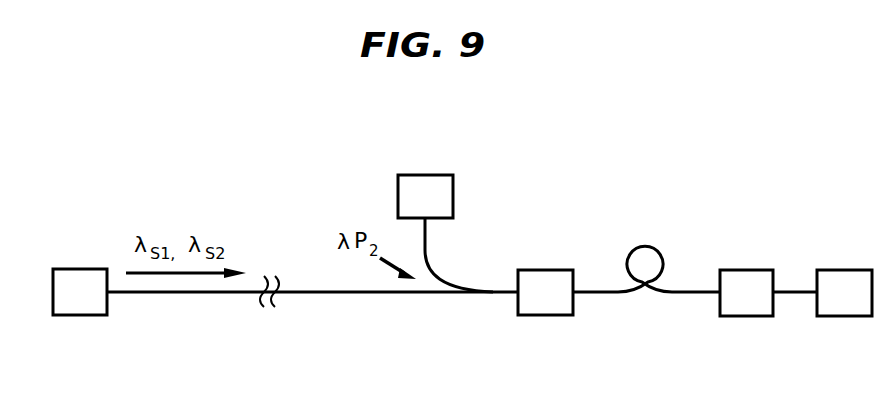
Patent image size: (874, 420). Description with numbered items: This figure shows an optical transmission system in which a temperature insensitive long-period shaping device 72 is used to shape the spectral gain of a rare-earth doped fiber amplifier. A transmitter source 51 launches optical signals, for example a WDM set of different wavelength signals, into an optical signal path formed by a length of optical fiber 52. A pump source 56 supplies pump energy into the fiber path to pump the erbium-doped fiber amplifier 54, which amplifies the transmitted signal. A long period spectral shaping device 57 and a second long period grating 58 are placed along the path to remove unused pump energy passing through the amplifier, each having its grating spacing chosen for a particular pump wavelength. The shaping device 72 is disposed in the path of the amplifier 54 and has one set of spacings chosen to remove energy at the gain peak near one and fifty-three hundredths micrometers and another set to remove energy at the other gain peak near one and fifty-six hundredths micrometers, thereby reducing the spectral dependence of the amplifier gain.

The transmitter source 51 is at (78, 269).
The optical fiber 52 is at (203, 293).
The erbium-doped fiber amplifier 54 is at (633, 254).
The pump source 56 is at (420, 175).
The long period spectral shaping device 57 is at (543, 315).
The second long period grating 58 is at (843, 316).
The temperature insensitive long-period shaping device 72 is at (747, 316).